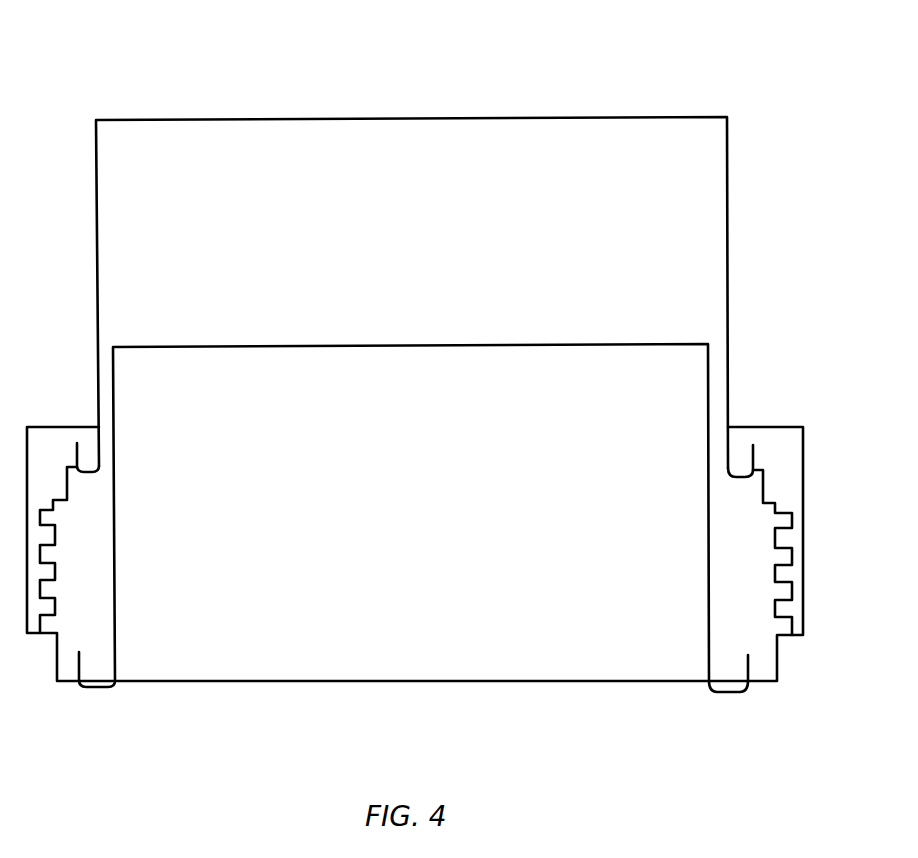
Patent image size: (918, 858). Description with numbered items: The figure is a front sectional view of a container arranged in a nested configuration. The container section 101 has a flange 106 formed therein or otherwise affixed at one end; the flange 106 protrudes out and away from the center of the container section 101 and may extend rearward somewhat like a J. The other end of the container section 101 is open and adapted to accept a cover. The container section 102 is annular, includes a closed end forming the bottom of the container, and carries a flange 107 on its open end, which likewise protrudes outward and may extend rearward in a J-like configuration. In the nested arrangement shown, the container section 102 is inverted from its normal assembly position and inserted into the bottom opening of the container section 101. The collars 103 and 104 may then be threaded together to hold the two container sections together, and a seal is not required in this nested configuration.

The container section 101 is at (392, 117).
The container section 102 is at (347, 343).
The collar 103 is at (745, 427).
The collar 104 is at (87, 607).
The flange 106 is at (100, 460).
The flange 107 is at (732, 692).